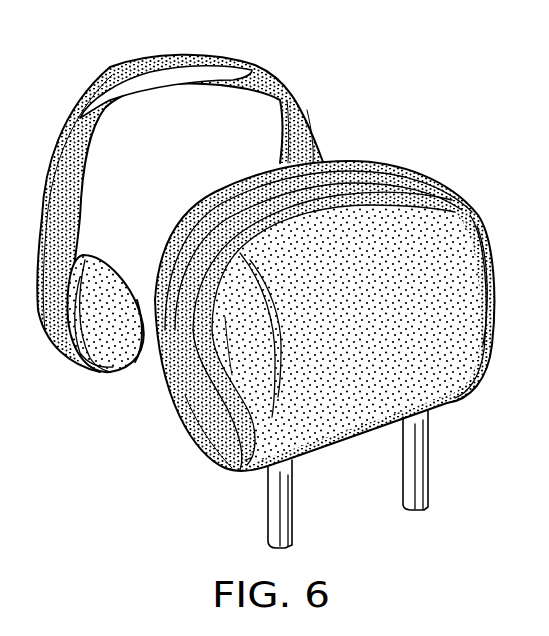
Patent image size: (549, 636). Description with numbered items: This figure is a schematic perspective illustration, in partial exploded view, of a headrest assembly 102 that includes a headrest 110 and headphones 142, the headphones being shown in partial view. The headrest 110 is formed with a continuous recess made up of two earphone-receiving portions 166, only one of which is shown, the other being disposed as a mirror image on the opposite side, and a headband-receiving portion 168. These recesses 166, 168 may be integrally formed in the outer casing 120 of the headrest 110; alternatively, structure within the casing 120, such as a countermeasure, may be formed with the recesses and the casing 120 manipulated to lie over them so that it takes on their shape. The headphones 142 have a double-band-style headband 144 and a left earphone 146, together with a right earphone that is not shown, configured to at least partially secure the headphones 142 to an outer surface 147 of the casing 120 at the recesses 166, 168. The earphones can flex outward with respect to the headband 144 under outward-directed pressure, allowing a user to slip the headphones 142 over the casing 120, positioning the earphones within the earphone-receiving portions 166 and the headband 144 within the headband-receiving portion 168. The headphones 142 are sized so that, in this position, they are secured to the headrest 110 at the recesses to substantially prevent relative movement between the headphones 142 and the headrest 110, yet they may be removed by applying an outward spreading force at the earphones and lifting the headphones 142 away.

The headrest assembly 102 is at (346, 72).
The headrest 110 is at (455, 197).
The outer casing 120 is at (420, 208).
The headphones 142 is at (250, 72).
The headband 144 is at (90, 97).
The left earphone 146 is at (100, 374).
The outer surface 147 is at (342, 213).
The earphone-receiving portion 166 is at (193, 403).
The headband-receiving portion 168 is at (373, 183).